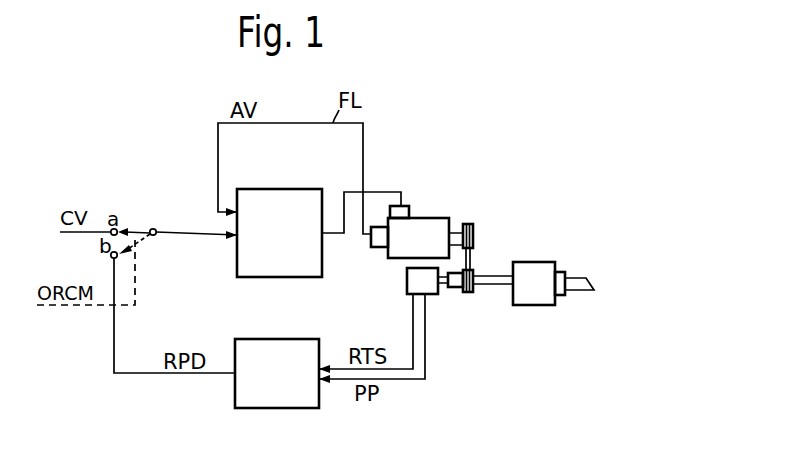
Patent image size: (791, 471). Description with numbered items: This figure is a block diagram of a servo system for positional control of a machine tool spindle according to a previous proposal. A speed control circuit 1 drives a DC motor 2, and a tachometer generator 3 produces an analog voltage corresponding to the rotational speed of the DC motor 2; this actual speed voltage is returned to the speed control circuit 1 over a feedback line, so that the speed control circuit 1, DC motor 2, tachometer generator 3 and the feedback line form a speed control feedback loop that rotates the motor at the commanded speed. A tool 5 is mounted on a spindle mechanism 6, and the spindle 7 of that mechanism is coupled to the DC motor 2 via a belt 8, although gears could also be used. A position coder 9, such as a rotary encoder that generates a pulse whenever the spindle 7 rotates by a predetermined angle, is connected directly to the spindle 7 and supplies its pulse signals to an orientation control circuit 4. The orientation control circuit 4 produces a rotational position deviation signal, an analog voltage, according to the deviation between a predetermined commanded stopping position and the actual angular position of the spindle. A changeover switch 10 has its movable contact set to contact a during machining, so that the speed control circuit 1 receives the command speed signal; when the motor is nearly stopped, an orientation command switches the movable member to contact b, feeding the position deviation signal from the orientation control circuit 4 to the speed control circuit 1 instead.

The speed control circuit 1 is at (279, 277).
The DC motor 2 is at (438, 225).
The tachometer generator 3 is at (377, 247).
The orientation control circuit 4 is at (285, 408).
The tool 5 is at (580, 278).
The spindle mechanism 6 is at (540, 262).
The spindle 7 is at (500, 288).
The belt 8 is at (478, 262).
The position coder 9 is at (435, 294).
The changeover switch 10 is at (137, 226).